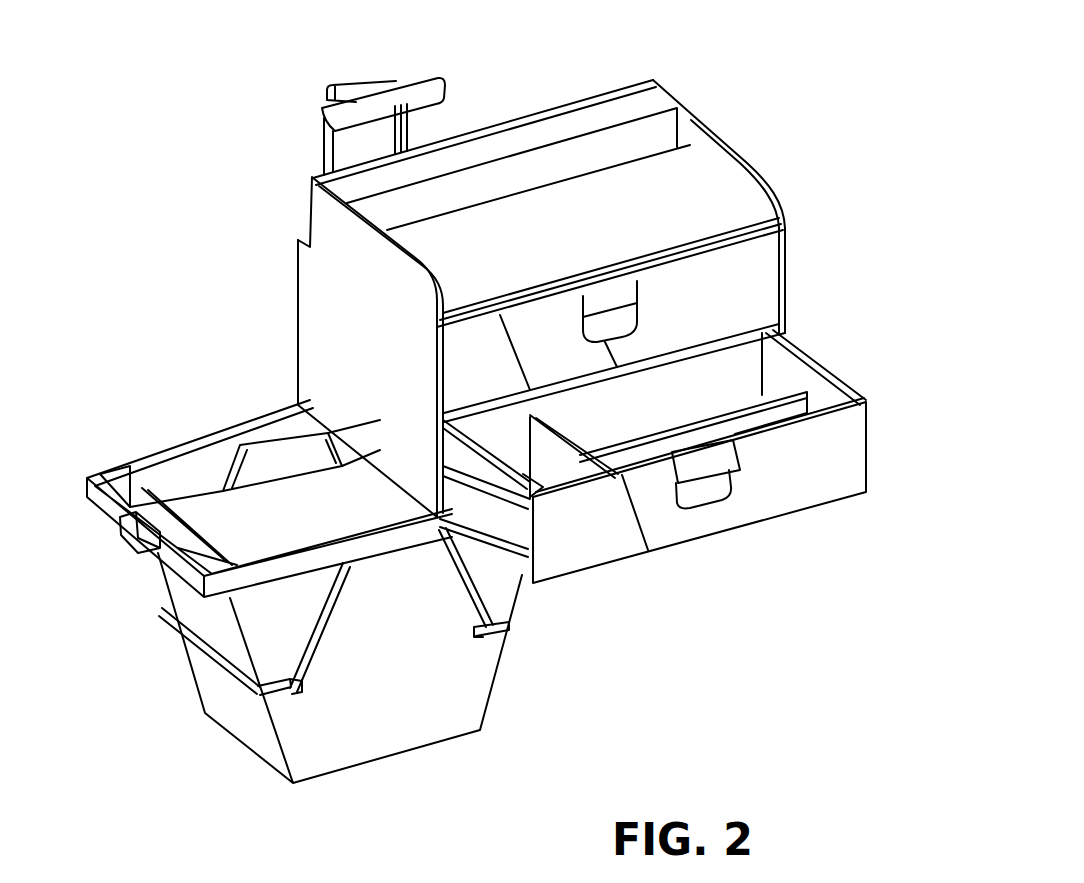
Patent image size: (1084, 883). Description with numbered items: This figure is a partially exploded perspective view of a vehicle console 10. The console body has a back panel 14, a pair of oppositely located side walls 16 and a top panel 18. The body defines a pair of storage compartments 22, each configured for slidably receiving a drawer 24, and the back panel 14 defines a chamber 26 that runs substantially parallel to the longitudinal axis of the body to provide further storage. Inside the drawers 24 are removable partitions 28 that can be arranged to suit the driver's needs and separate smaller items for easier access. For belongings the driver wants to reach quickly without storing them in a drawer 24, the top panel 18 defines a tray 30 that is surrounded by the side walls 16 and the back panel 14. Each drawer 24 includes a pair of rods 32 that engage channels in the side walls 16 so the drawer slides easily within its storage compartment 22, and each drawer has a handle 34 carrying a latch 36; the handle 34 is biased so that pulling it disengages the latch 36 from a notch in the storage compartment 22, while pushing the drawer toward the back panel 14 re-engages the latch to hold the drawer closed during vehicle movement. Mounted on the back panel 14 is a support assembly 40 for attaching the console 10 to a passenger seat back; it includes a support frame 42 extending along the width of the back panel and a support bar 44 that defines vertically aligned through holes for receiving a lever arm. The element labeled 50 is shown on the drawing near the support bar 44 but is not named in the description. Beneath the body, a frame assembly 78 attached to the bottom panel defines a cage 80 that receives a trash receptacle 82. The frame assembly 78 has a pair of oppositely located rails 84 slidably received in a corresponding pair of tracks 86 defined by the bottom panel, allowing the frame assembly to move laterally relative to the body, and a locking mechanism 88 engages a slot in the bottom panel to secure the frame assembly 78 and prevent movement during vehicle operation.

The console 10 is at (200, 166).
The back panel 14 is at (309, 223).
The side walls 16 is at (327, 336).
The top panel 18 is at (708, 150).
The storage compartments 22 is at (785, 327).
The drawer 24 is at (758, 277).
The chamber 26 is at (627, 107).
The removable partitions 28 is at (805, 387).
The tray 30 is at (727, 218).
The rods 32 is at (513, 538).
The handle 34 is at (723, 477).
The latch 36 is at (688, 458).
The support assembly 40 is at (316, 124).
The support frame 42 is at (327, 152).
The support bar 44 is at (412, 132).
The handle cap 50 is at (348, 88).
The frame assembly 78 is at (113, 462).
The cage 80 is at (190, 648).
The trash receptacle 82 is at (238, 718).
The rails 84 is at (203, 458).
The tracks 86 is at (505, 578).
The locking mechanism 88 is at (130, 543).